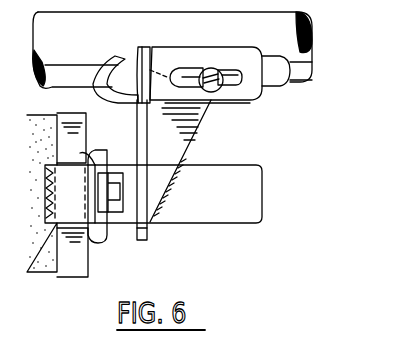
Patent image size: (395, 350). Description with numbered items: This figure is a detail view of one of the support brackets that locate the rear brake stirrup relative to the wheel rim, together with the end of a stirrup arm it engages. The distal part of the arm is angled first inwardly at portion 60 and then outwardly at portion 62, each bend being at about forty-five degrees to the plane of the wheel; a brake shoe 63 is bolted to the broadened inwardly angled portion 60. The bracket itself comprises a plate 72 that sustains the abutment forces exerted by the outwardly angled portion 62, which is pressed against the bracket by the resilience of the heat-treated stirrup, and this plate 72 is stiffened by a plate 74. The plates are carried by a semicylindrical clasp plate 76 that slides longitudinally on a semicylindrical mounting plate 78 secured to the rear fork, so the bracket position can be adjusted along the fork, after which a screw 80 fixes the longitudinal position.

The inwardly angled portion 60 is at (93, 236).
The outwardly angled portion 62 is at (202, 225).
The brake shoe 63 is at (72, 272).
The plate 72 is at (137, 125).
The stiffening plate 74 is at (196, 137).
The semicylindrical clasp plate 76 is at (238, 50).
The semicylindrical mounting plate 78 is at (270, 85).
The screw 80 is at (205, 66).